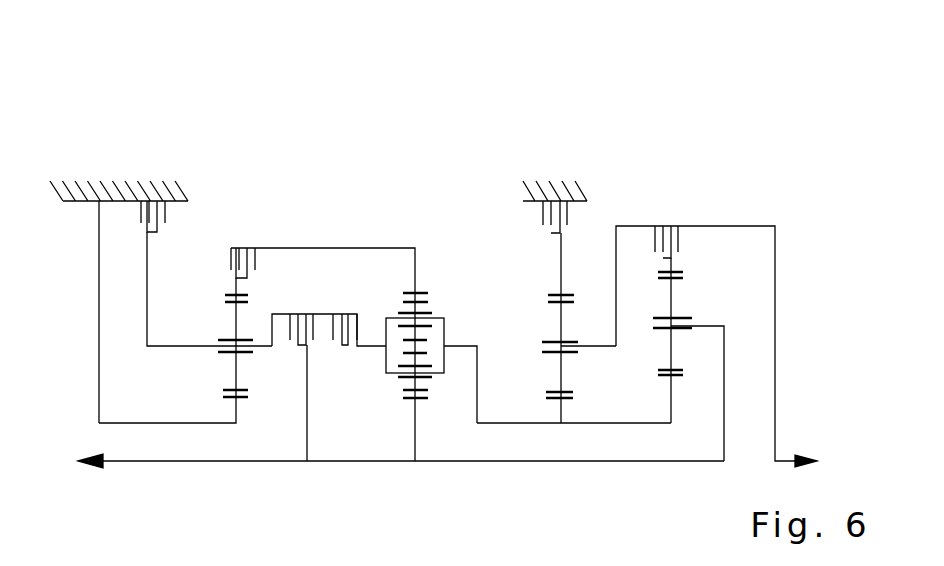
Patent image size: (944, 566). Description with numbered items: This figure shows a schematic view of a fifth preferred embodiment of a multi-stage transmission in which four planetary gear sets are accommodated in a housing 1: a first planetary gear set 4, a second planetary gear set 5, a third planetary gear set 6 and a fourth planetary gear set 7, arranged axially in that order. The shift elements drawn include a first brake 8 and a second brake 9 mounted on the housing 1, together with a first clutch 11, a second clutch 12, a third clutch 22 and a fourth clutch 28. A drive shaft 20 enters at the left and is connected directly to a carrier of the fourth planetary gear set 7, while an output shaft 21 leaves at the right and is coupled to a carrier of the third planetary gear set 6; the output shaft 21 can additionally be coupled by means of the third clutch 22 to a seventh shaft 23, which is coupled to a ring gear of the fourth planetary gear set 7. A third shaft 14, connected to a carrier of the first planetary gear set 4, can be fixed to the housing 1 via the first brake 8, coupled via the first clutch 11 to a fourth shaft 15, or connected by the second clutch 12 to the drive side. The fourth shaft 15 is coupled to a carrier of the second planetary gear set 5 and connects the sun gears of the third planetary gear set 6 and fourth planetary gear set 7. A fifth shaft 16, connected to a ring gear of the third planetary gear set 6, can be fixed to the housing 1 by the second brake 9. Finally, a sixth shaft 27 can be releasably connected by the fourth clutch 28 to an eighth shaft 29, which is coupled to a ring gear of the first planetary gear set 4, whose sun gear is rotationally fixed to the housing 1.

The housing 1 is at (157, 187).
The first planetary gear set 4 is at (237, 173).
The second planetary gear set 5 is at (417, 173).
The third planetary gear set 6 is at (562, 173).
The fourth planetary gear set 7 is at (673, 173).
The first brake 8 is at (144, 197).
The second brake 9 is at (558, 217).
The first clutch 11 is at (343, 345).
The second clutch 12 is at (300, 345).
The third shaft 14 is at (146, 310).
The fourth shaft 15 is at (642, 422).
The fifth shaft 16 is at (560, 270).
The drive shaft 20 is at (200, 463).
The output shaft 21 is at (775, 310).
The third clutch 22 is at (662, 227).
The seventh shaft 23 is at (678, 278).
The sixth shaft 27 is at (395, 248).
The fourth clutch 28 is at (253, 248).
The eighth shaft 29 is at (238, 287).